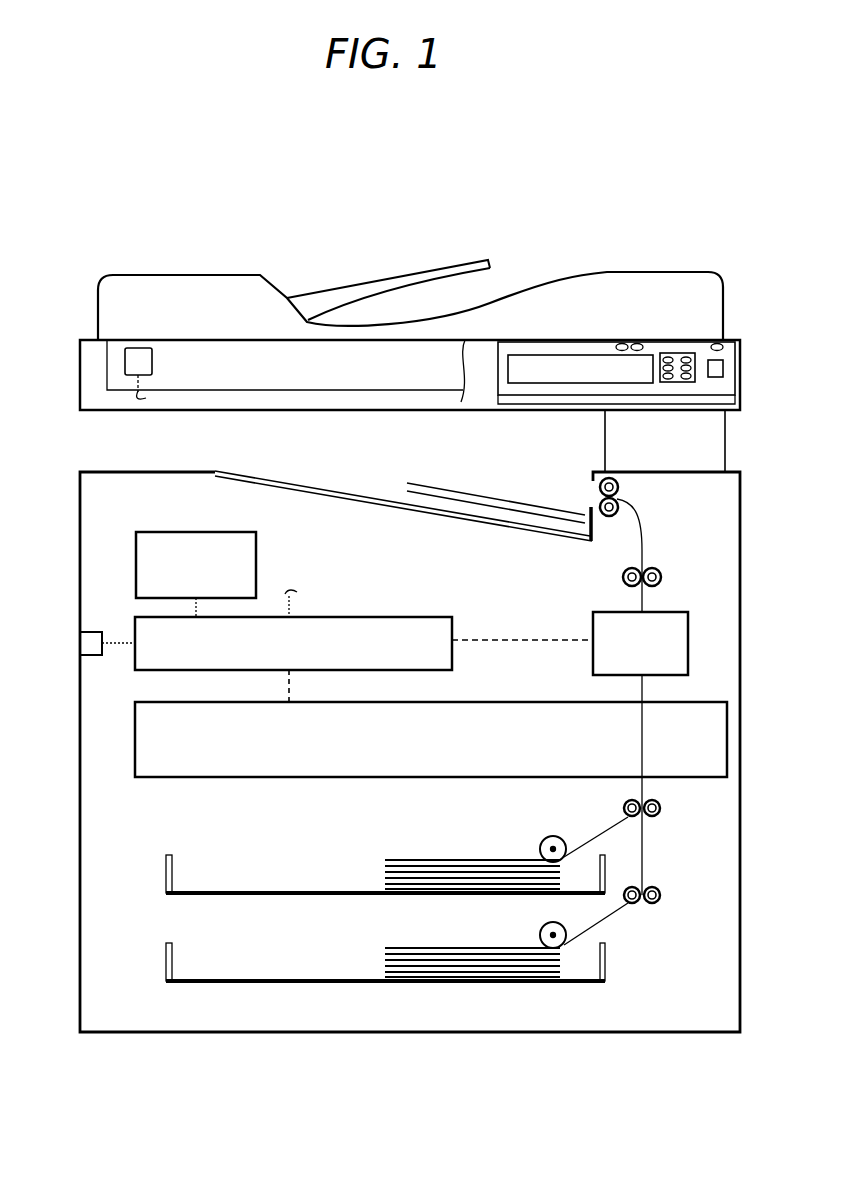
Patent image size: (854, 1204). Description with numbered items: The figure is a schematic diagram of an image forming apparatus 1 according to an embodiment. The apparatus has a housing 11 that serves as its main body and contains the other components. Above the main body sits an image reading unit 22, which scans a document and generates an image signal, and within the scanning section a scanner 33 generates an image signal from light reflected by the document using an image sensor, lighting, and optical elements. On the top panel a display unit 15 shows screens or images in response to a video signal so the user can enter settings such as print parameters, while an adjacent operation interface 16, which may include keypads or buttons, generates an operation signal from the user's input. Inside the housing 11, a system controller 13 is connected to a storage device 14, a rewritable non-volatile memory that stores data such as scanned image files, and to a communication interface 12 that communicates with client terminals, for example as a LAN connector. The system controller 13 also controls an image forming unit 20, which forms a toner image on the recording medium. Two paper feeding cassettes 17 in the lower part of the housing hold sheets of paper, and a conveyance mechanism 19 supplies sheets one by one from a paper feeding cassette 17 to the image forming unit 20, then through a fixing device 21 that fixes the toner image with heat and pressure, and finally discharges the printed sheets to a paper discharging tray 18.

The image forming apparatus 1 is at (407, 139).
The housing 11 is at (78, 486).
The communication interface 12 is at (93, 630).
The system controller 13 is at (383, 617).
The storage device 14 is at (198, 532).
The display unit 15 is at (540, 352).
The operation interface 16 is at (680, 355).
The paper feeding cassette 17 is at (166, 868).
The paper discharging tray 18 is at (299, 485).
The conveyance mechanism 19 is at (668, 546).
The image forming unit 20 is at (524, 702).
The fixing device 21 is at (690, 645).
The image reading unit 22 is at (229, 241).
The scanner 33 is at (125, 366).